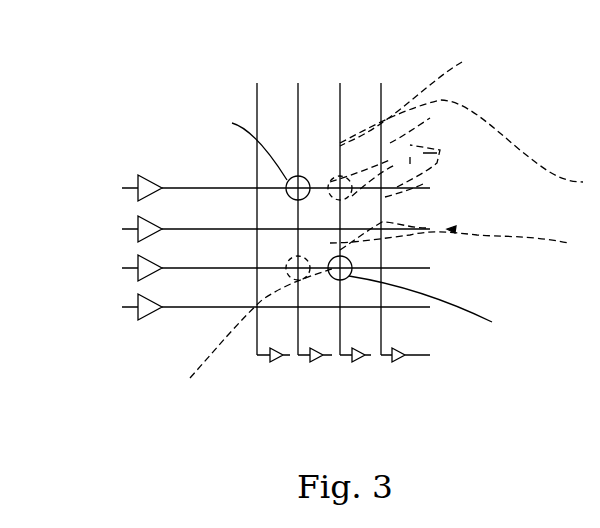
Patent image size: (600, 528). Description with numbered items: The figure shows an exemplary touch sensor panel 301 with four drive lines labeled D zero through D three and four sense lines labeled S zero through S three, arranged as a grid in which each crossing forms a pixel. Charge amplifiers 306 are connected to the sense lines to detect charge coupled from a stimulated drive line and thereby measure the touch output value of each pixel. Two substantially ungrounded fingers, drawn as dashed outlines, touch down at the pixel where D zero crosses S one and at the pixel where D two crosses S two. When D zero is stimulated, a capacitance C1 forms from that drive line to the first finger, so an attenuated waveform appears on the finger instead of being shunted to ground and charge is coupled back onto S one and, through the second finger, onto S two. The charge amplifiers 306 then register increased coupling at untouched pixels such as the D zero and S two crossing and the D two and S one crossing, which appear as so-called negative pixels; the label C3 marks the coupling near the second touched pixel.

The touch sensor panel 301 is at (302, 231).
The charge amplifiers 306 is at (382, 403).
The capacitance C1 is at (319, 198).
The pixel capacitance at D2,S2 C3 is at (353, 257).